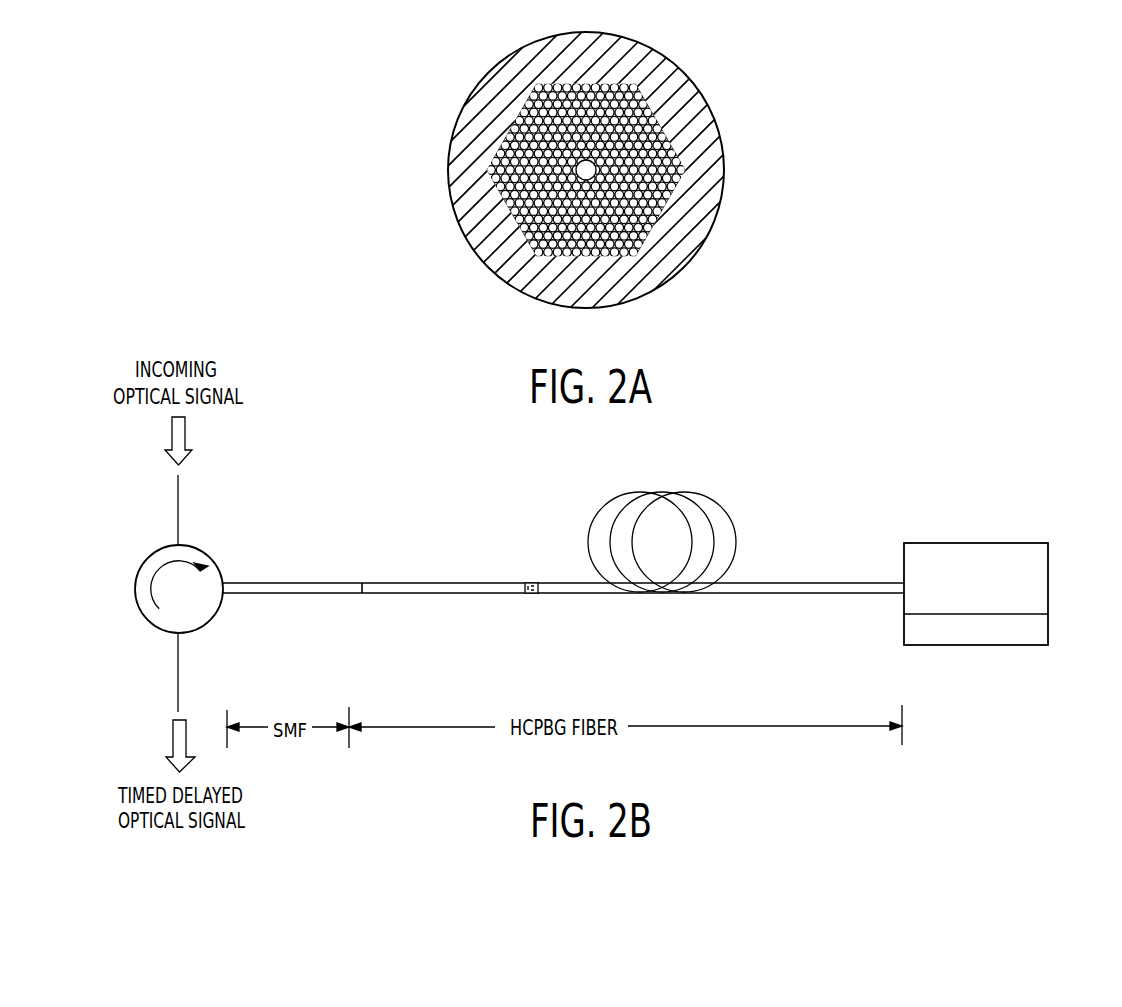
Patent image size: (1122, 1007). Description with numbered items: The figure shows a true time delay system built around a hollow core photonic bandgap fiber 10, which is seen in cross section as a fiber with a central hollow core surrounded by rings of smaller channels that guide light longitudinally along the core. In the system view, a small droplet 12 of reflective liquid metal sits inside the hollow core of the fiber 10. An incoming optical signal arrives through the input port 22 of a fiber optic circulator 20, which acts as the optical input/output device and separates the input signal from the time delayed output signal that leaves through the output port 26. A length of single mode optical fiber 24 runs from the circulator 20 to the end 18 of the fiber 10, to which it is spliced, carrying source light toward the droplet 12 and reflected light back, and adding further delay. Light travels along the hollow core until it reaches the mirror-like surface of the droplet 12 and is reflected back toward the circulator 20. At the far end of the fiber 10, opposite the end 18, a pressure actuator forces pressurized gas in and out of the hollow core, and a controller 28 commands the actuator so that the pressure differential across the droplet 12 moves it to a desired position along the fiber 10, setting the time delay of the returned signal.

In FIG. 2A, the hollow core photonic bandgap fiber 10 is at (703, 115).
In FIG. 2B, the hollow core photonic bandgap fiber 10 is at (440, 596).
In FIG. 2B, the droplet 12 is at (528, 596).
In FIG. 2B, the end 18 is at (362, 596).
In FIG. 2B, the fiber optic circulator 20 is at (137, 590).
In FIG. 2B, the input port fiber 22 is at (178, 505).
In FIG. 2B, the optical fiber 24 is at (294, 596).
In FIG. 2B, the output port fiber 26 is at (178, 677).
In FIG. 2B, the controller 28 is at (1048, 634).